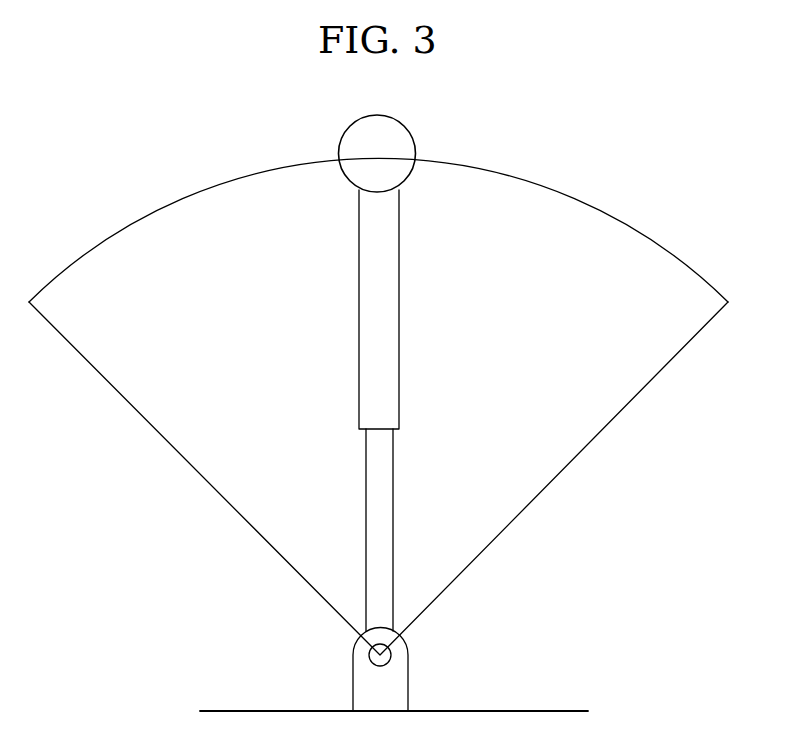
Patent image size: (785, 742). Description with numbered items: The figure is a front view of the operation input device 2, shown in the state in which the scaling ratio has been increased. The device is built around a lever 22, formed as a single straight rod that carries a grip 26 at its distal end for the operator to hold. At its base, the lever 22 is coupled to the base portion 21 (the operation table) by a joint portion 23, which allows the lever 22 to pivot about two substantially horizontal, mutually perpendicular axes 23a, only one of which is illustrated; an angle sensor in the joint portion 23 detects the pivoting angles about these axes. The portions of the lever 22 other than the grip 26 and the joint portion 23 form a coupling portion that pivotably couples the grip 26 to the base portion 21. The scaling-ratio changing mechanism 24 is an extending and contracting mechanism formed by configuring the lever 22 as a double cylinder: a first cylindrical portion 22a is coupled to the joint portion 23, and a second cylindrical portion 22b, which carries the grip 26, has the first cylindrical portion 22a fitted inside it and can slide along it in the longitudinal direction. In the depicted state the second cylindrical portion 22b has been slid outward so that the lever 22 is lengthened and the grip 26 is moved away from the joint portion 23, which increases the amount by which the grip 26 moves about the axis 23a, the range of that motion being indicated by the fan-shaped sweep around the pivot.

The operation input device 2 is at (590, 134).
The base portion 21 is at (563, 710).
The lever 22 is at (449, 410).
The first cylindrical portion 22a is at (429, 530).
The second cylindrical portion 22b is at (400, 403).
The joint portion 23 is at (408, 641).
The axis 23a is at (391, 660).
The scaling-ratio changing mechanism 24 is at (325, 402).
The grip 26 is at (412, 131).